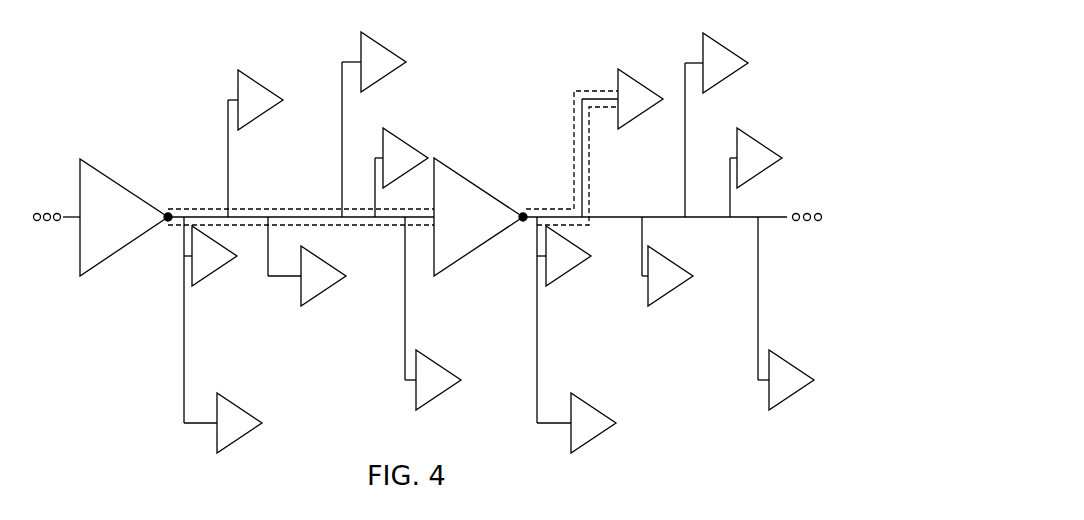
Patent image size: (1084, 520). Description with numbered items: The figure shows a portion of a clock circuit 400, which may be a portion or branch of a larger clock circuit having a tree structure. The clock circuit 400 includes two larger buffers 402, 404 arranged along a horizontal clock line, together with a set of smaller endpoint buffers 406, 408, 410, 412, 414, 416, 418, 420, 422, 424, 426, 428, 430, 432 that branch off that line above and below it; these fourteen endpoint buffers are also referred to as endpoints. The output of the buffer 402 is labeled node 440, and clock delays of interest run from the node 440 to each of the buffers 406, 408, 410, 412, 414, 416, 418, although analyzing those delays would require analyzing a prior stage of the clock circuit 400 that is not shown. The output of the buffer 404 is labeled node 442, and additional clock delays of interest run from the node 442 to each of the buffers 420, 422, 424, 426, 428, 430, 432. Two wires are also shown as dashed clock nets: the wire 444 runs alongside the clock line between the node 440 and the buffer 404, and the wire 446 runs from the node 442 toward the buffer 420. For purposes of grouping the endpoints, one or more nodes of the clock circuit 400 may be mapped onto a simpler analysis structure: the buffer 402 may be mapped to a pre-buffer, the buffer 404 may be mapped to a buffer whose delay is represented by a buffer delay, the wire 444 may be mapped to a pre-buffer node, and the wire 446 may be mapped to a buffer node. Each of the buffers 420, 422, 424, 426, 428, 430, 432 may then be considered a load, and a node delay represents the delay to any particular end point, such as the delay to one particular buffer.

The clock circuit 400 is at (151, 85).
The buffer 402 is at (114, 235).
The buffer 404 is at (467, 235).
The buffer 406 is at (270, 107).
The buffer 408 is at (393, 69).
The buffer 410 is at (415, 165).
The buffer 412 is at (224, 263).
The buffer 414 is at (249, 430).
The buffer 416 is at (333, 283).
The buffer 418 is at (448, 387).
The buffer 420 is at (650, 106).
The buffer 422 is at (735, 70).
The buffer 424 is at (769, 165).
The buffer 426 is at (578, 263).
The buffer 428 is at (603, 430).
The buffer 430 is at (680, 283).
The buffer 432 is at (801, 387).
The node 440 is at (168, 222).
The node 442 is at (521, 222).
The wire 444 is at (307, 207).
The wire 446 is at (553, 207).